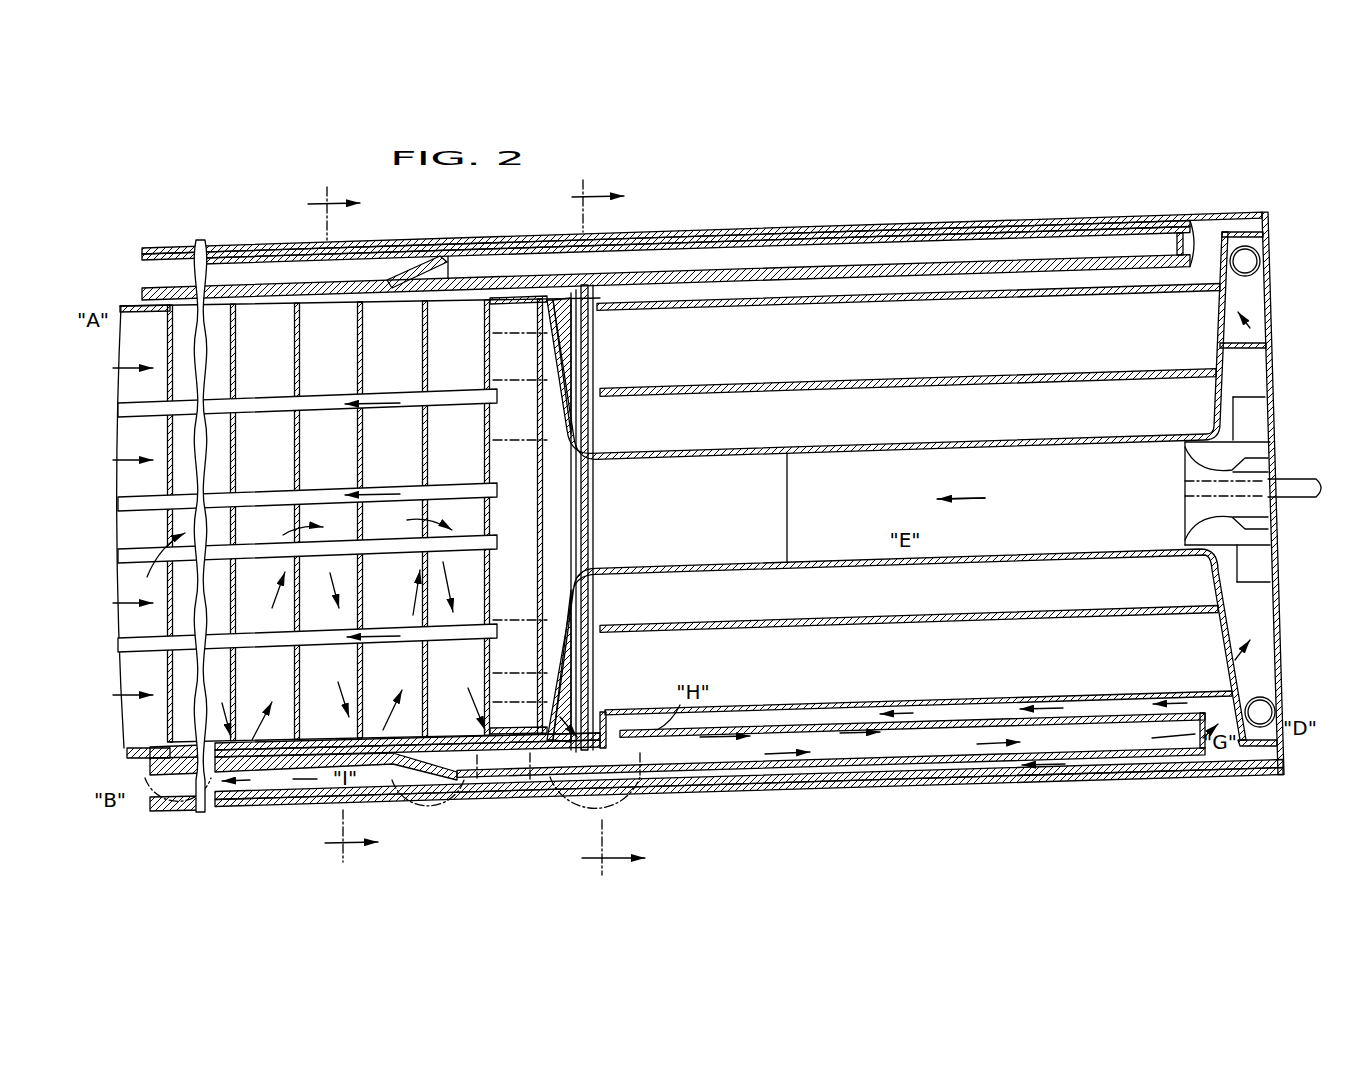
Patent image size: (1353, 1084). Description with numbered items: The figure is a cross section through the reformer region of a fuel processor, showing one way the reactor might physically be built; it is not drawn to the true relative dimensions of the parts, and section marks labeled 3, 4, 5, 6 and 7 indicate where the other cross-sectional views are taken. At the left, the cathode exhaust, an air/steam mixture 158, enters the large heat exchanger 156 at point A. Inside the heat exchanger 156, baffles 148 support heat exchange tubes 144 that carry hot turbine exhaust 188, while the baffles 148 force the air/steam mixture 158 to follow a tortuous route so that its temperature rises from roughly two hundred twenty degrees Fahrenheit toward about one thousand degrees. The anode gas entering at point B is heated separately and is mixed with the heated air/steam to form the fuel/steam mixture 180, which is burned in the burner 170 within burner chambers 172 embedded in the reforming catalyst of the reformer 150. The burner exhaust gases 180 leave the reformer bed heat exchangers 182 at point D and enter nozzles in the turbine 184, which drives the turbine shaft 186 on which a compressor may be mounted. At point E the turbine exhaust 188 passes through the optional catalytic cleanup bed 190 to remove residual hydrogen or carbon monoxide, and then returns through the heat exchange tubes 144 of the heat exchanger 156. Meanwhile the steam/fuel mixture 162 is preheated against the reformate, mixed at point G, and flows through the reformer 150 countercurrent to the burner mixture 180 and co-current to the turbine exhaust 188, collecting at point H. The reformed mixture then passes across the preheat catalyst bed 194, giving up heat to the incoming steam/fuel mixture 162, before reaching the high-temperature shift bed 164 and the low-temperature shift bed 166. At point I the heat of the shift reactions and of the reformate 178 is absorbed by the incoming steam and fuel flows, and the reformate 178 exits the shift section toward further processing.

The heat exchange tubes 144 is at (395, 393).
The baffles 148 is at (294, 370).
The reformer 150 is at (713, 485).
The heat exchanger 156 is at (307, 450).
The air/steam mixture 158 is at (112, 531).
The steam/fuel mixture 162 is at (977, 713).
The high-temperature water-gas-shift bed 164 is at (400, 777).
The low temperature water-gas-shift bed 166 is at (165, 783).
The burner 170 is at (774, 374).
The burner chambers 172 is at (1026, 305).
The reformate 178 is at (407, 762).
The burner exhaust gases 180 is at (718, 348).
The reformer bed heat exchangers 182 is at (1138, 378).
The turbine 184 is at (1253, 452).
The turbine shaft 186 is at (1303, 480).
The turbine exhaust 188 is at (480, 397).
The catalytic cleanup bed 190 is at (666, 520).
The preheat catalyst bed 194 is at (953, 747).
The section line 3- 3 is at (604, 528).
The section line 4- 4 is at (343, 523).
The detail region 5 is at (170, 783).
The detail region 6 is at (461, 790).
The detail region 7 is at (595, 788).